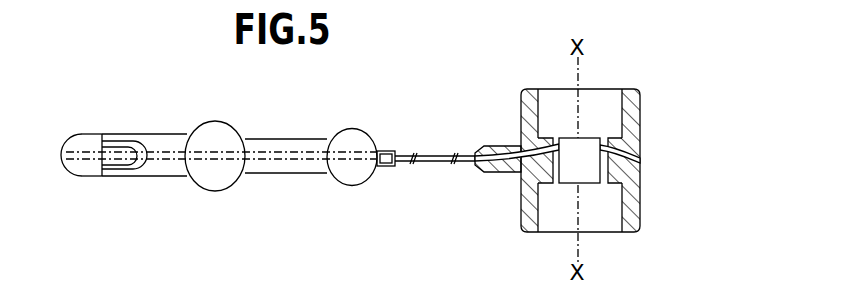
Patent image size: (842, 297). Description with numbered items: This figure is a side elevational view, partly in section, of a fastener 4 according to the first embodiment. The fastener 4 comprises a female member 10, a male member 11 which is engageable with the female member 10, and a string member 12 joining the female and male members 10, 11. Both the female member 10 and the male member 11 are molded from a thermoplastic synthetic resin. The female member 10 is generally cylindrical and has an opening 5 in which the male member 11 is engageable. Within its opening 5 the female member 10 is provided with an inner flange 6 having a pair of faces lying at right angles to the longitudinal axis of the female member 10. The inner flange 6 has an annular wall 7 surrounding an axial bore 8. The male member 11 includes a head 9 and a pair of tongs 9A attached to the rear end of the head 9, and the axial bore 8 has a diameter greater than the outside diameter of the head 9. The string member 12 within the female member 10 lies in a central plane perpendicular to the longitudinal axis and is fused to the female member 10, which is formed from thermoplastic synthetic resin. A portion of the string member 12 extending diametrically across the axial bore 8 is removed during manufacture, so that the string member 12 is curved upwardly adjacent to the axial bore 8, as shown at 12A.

The fastener 4 is at (366, 130).
The opening 5 is at (607, 98).
The inner flange 6 is at (643, 174).
The annular wall 7 is at (603, 137).
The axial bore 8 is at (570, 186).
The head 9 is at (82, 174).
The tongs 9A is at (122, 170).
The female member 10 is at (643, 121).
The male member 11 is at (166, 176).
The string member 12 is at (283, 175).
The curved portion of string member 12A is at (527, 128).